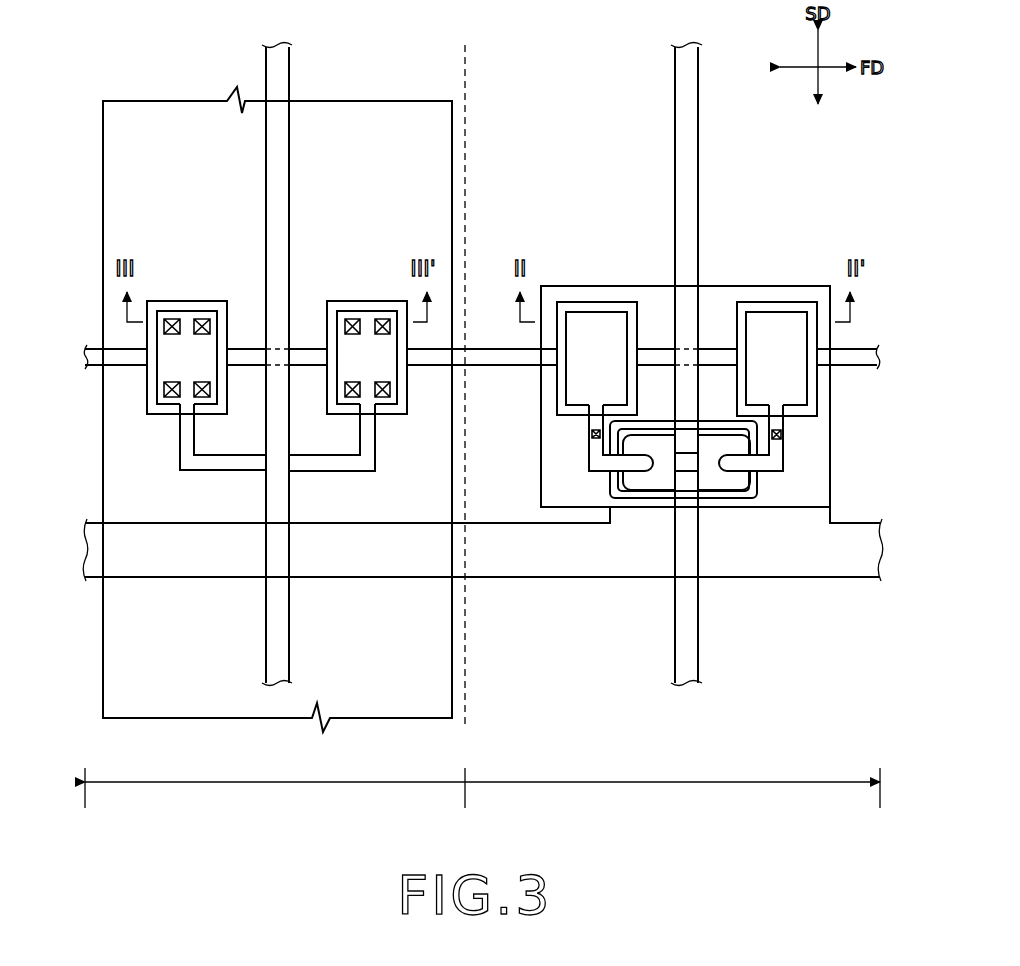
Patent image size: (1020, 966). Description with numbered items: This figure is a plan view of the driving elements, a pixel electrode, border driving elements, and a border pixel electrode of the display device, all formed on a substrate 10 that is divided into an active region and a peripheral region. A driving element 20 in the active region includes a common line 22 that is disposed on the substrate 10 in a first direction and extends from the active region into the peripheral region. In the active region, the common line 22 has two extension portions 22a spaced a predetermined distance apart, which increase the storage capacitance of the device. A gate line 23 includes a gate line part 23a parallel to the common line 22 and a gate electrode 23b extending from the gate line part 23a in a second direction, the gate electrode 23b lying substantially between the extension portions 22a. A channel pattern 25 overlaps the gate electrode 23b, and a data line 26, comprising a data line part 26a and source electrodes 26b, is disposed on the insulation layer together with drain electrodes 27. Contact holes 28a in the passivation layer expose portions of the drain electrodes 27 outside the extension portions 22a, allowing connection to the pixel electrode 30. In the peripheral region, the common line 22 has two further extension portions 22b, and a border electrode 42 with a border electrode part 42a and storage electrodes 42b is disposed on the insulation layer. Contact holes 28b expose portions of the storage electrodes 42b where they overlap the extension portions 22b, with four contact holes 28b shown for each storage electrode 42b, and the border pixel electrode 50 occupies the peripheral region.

The substrate 10 is at (811, 712).
The driving element 20 is at (645, 262).
The common line 22 is at (865, 344).
The extension portions 22a is at (722, 357).
The extension portions 22b is at (206, 347).
The gate line 23 is at (488, 570).
The gate line part 23a is at (750, 568).
The gate electrode 23b is at (750, 517).
The channel pattern 25 is at (744, 535).
The data line 26 is at (706, 115).
The data line part 26a is at (693, 186).
The source electrodes 26b is at (645, 492).
The drain electrodes 27 is at (760, 320).
The contact holes 28a is at (785, 434).
The contact holes 28b is at (203, 320).
The pixel electrode 30 is at (783, 300).
The border electrode 42 is at (293, 68).
The border electrode part 42a is at (281, 185).
The storage electrodes 42b is at (380, 386).
The border pixel electrode 50 is at (163, 108).